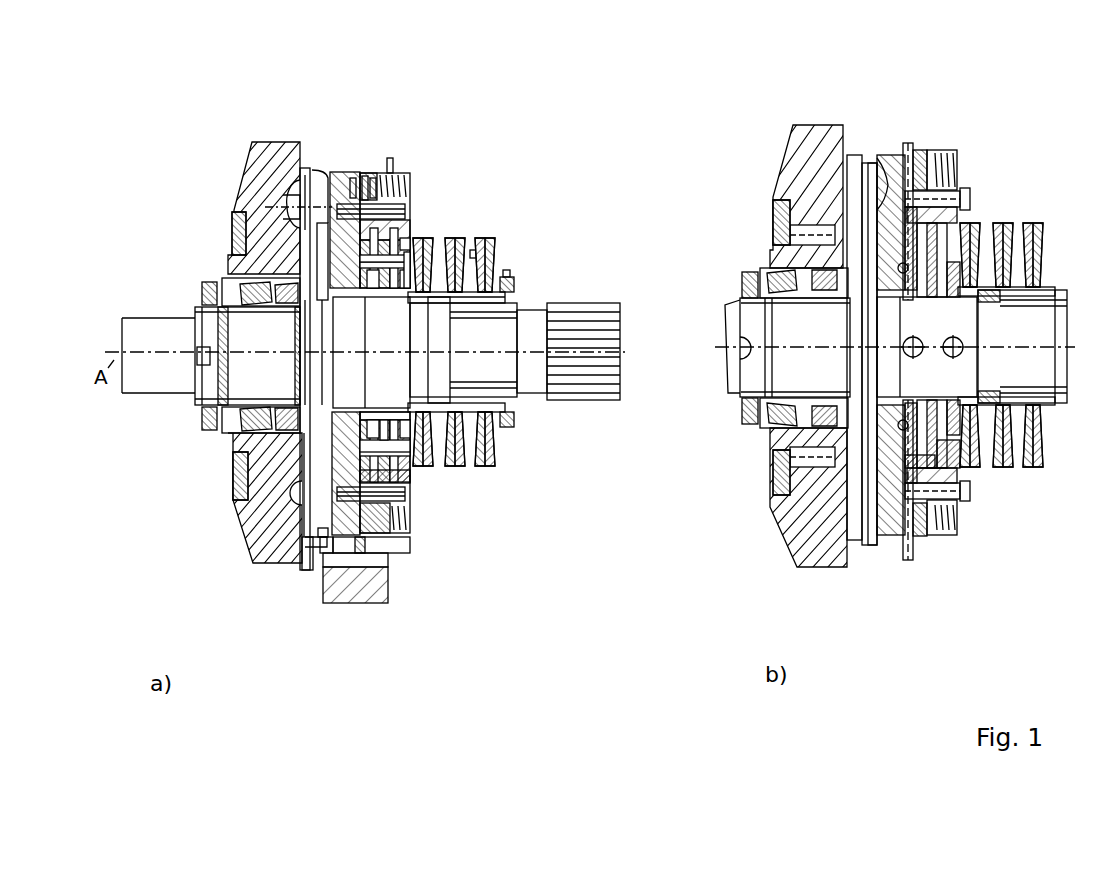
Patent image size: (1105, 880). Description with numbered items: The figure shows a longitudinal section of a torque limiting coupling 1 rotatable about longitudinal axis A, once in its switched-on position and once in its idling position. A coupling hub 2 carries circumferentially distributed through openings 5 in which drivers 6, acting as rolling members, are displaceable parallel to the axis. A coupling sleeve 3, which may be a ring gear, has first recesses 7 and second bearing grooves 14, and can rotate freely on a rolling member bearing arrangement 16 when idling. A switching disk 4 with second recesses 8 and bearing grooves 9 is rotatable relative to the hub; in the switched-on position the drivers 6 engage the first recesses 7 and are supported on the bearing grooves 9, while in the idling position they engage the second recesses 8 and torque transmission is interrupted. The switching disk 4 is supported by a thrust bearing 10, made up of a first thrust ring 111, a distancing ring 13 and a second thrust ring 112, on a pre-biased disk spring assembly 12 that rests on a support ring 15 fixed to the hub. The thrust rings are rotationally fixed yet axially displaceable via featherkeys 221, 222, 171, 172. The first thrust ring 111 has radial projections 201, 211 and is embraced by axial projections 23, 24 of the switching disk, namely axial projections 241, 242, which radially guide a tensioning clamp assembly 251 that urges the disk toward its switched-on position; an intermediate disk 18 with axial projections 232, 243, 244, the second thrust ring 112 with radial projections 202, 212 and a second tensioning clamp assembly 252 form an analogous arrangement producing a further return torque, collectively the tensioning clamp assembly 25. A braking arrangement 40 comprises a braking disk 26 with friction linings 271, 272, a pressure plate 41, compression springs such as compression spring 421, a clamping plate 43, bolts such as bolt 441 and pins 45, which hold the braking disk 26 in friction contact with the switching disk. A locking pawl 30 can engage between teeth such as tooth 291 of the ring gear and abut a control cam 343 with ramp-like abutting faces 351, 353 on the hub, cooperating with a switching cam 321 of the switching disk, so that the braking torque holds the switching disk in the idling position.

The torque limiting coupling 1 is at (356, 66).
The coupling hub 2 is at (267, 386).
The coupling sleeve 3 is at (290, 148).
The switching disk 4 is at (338, 176).
The through openings 5 is at (303, 212).
The drivers 6 is at (290, 203).
The first recesses 7 is at (262, 240).
The second recesses 8 is at (888, 166).
The bearing grooves 9 is at (322, 226).
The thrust bearing 10 is at (358, 288).
The first thrust ring 111 is at (364, 290).
The second thrust ring 112 is at (395, 290).
The disk spring assembly 12 is at (507, 258).
The distancing ring 13 is at (392, 290).
The second bearing grooves 14 is at (828, 194).
The support ring 15 is at (514, 282).
The rolling member bearing arrangement 16 is at (222, 440).
The featherkey 171 is at (412, 290).
The featherkey 172 is at (412, 411).
The intermediate disk 18 is at (966, 196).
The radial projection 201 is at (410, 262).
The radial projection 202 is at (480, 258).
The radial projection 211 is at (372, 452).
The radial projection 212 is at (385, 437).
The featherkey 221 is at (373, 290).
The featherkey 222 is at (373, 411).
The spring 23 is at (368, 262).
The axial projection 232 is at (408, 236).
The pin 24 is at (909, 148).
The axial projection 241 is at (917, 300).
The axial projection 242 is at (920, 402).
The axial projection 243 is at (946, 300).
The axial projection 244 is at (958, 405).
The tensioning clamp assembly 25 is at (368, 482).
The tensioning clamp assembly 251 is at (912, 466).
The second tensioning clamp assembly 252 is at (960, 472).
The braking disk 26 is at (368, 170).
The friction lining 271 is at (354, 170).
The friction lining 272 is at (393, 170).
The tooth 291 is at (366, 549).
The locking pawl 30 is at (380, 604).
The switching cam 321 is at (326, 553).
The control cam 343 is at (330, 342).
The abutting face 351 is at (302, 566).
The abutting face 353 is at (339, 347).
The braking arrangement 40 is at (437, 168).
The pressure plate 41 is at (389, 176).
The compression spring 421 is at (402, 178).
The clamping plate 43 is at (406, 206).
The bolt 441 is at (410, 487).
The pins 45 is at (405, 501).